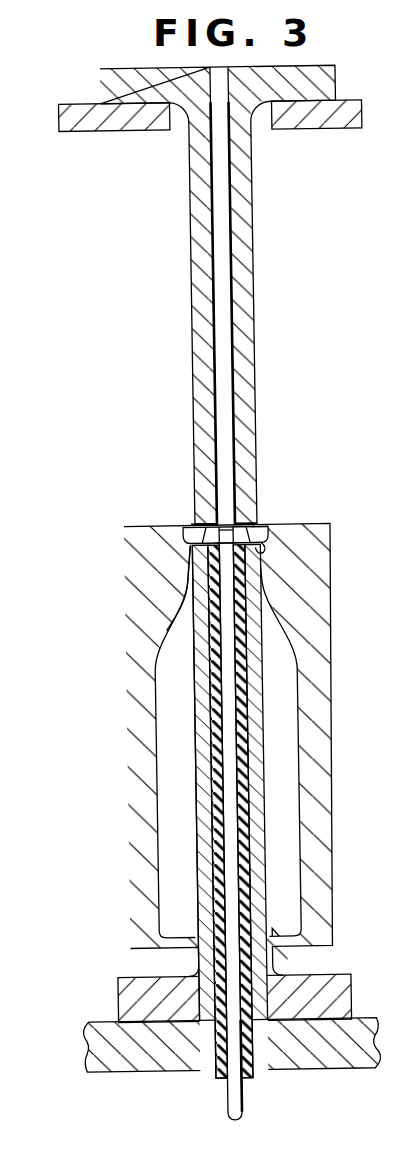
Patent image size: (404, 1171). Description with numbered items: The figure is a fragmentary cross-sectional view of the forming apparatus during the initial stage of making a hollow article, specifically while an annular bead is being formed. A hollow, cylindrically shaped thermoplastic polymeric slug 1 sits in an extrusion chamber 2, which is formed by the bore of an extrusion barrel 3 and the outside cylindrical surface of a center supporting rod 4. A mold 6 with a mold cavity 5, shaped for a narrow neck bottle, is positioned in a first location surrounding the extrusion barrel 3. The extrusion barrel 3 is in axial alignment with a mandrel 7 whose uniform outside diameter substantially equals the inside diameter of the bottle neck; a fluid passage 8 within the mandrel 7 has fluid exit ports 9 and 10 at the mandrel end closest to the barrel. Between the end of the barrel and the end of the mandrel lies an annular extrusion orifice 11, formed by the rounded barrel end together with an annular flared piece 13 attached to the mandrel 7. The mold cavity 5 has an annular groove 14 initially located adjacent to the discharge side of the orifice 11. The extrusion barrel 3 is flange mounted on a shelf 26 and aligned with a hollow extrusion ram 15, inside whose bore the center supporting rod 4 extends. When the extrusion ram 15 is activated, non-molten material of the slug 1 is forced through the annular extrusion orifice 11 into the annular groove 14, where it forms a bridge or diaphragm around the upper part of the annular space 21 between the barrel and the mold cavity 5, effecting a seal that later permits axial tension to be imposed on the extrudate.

The thermoplastic polymeric slug 1 is at (202, 683).
The extrusion chamber 2 is at (201, 763).
The extrusion barrel 3 is at (187, 857).
The center supporting rod 4 is at (214, 1102).
The mold cavity 5 is at (161, 812).
The mold 6 is at (119, 736).
The mandrel 7 is at (190, 447).
The fluid passage 8 is at (213, 371).
The fluid exit port 9 is at (190, 526).
The fluid exit port 10 is at (242, 525).
The annular extrusion orifice 11 is at (257, 551).
The annular flared piece 13 is at (222, 530).
The annular groove 14 is at (282, 529).
The extrusion ram 15 is at (203, 1050).
The annular space 21 is at (182, 582).
The shelf 26 is at (80, 1018).